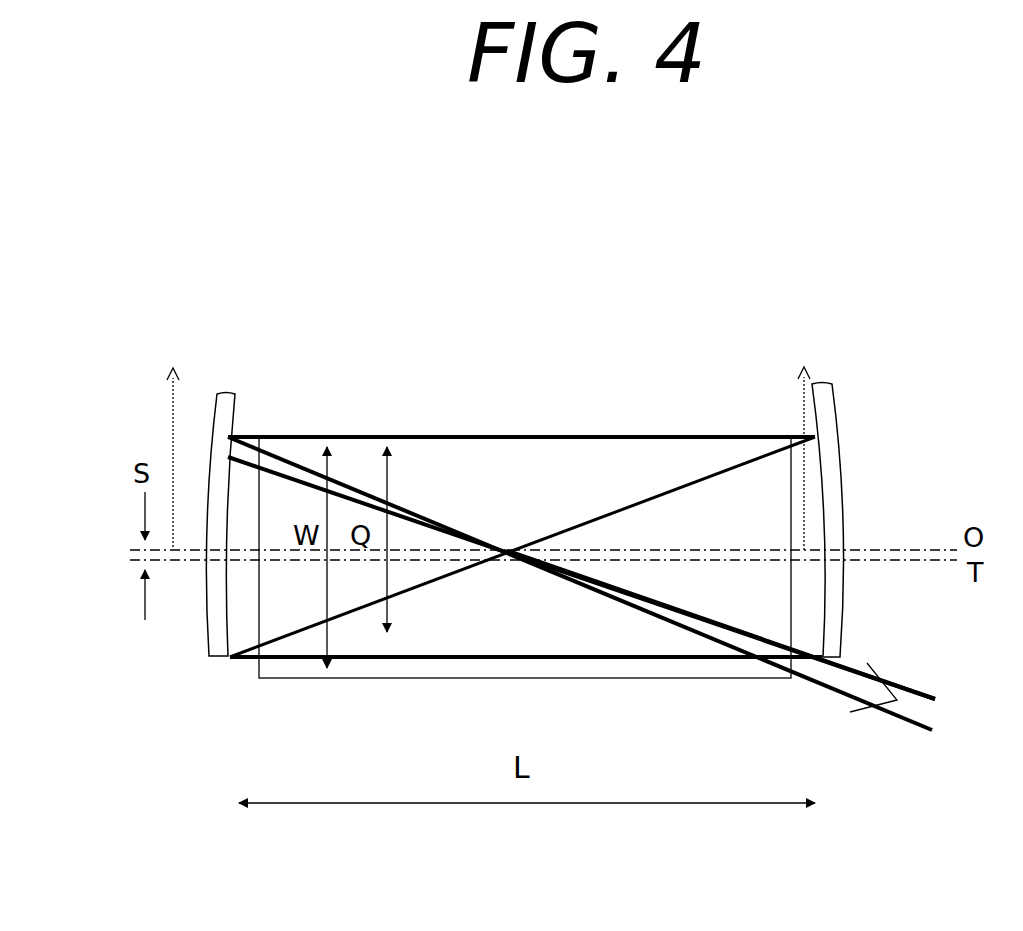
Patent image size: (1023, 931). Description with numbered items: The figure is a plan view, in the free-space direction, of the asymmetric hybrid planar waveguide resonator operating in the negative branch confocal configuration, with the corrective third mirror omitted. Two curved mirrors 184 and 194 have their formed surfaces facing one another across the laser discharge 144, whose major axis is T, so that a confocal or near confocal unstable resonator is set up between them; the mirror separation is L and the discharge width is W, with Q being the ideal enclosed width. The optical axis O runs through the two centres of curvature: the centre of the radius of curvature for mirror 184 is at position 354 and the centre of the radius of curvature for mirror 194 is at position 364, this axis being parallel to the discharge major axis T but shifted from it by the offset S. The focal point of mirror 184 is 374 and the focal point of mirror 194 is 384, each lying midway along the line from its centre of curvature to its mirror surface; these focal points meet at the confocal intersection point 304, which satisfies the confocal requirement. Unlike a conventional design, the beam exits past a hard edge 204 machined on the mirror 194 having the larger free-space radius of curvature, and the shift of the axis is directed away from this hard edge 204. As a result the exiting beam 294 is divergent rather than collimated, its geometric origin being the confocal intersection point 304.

The laser discharge 144 is at (460, 462).
The mirror 184 is at (208, 632).
The mirror 194 is at (835, 450).
The centre of radius of curvature for mirror 194 364 is at (173, 431).
The centre of radius of curvature for mirror 184 354 is at (803, 432).
The confocal intersection point 304 is at (510, 553).
The focal point of mirror 194 384 is at (508, 555).
The focal point of mirror 184 374 is at (510, 555).
The hard edge 204 is at (828, 665).
The exiting beam 294 is at (922, 727).